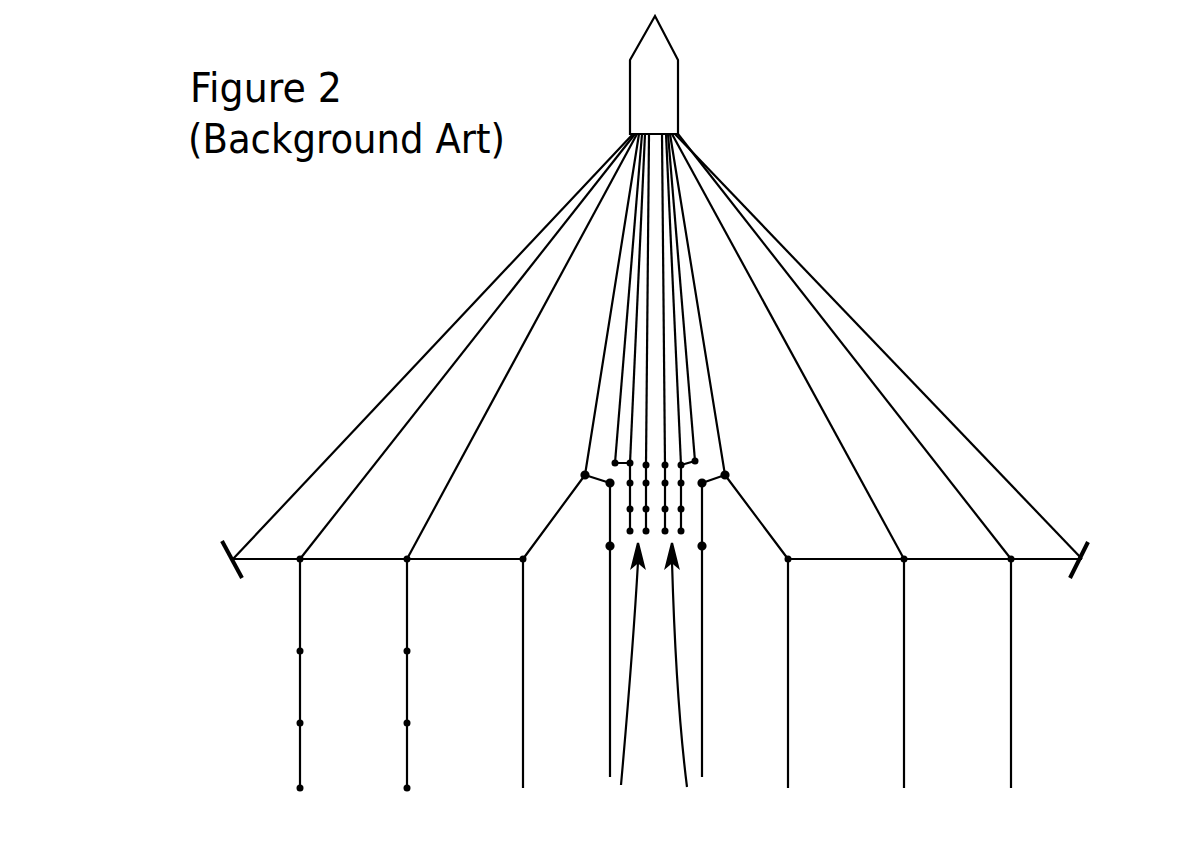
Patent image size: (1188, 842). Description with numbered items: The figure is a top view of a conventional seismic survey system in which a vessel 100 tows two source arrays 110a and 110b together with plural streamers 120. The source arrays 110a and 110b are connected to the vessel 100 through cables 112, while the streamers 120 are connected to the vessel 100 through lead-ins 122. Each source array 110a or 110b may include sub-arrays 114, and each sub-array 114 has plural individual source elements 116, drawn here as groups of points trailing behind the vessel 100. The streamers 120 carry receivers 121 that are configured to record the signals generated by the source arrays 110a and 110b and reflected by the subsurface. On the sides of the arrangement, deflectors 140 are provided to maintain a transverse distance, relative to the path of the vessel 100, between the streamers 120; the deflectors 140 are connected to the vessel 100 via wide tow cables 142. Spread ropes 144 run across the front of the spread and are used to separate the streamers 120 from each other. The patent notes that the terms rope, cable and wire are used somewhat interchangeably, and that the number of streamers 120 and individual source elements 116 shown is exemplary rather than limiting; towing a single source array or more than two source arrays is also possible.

The vessel 100 is at (663, 79).
The source array 110a is at (614, 677).
The source array 110b is at (700, 674).
The cable 112 is at (648, 298).
The sub-array 114 is at (683, 518).
The individual source element 116 is at (668, 462).
The streamer 120 is at (299, 685).
The receiver 121 is at (404, 651).
The lead-in 122 is at (478, 428).
The deflector 140 is at (226, 551).
The wide tow cable 142 is at (373, 405).
The spread rope 144 is at (463, 561).